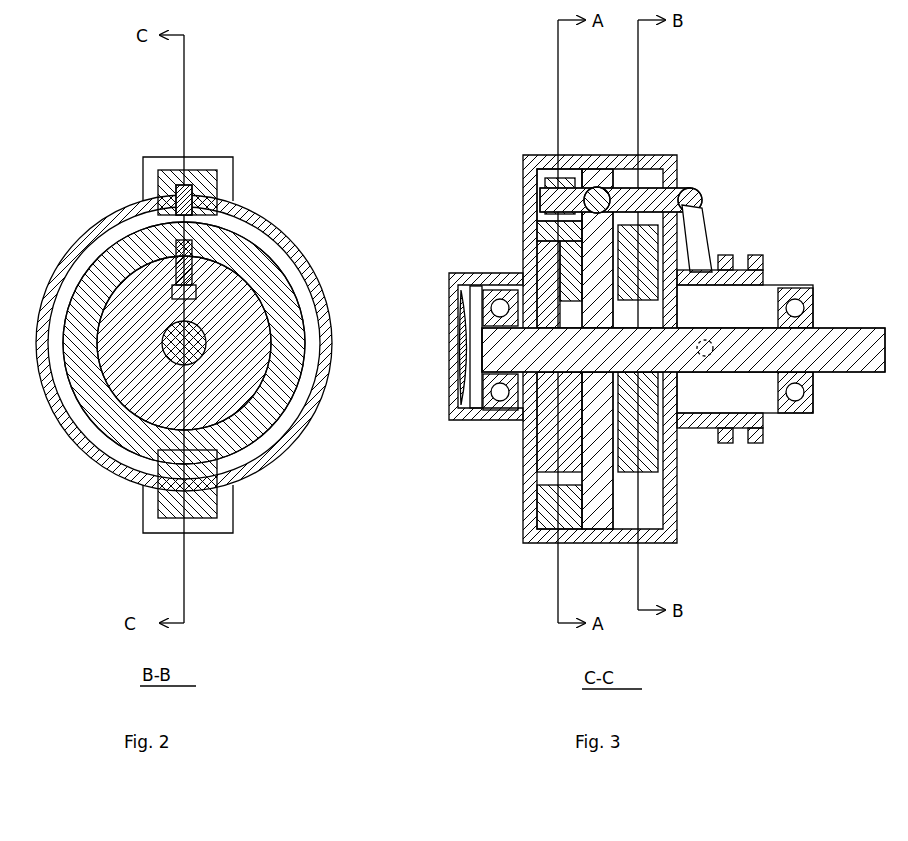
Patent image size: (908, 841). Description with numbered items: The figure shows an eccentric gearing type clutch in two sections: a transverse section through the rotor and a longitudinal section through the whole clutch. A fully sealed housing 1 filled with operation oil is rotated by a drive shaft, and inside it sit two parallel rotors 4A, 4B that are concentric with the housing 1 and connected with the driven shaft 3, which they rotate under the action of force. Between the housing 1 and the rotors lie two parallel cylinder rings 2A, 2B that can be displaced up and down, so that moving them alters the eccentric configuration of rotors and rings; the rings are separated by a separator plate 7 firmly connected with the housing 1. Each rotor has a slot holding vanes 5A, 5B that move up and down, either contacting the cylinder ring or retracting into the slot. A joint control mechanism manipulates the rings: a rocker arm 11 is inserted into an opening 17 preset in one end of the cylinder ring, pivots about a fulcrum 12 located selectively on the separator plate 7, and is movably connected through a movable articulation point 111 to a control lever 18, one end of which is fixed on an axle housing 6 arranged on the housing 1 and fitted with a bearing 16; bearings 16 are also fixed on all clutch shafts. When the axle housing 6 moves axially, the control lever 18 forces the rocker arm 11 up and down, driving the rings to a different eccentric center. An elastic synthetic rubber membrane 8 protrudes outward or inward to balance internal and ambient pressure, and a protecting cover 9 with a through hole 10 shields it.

In FIG. 3, the housing 1 is at (533, 160).
In FIG. 3, the cylinder ring 2A is at (537, 228).
In FIG. 2, the cylinder ring 2B is at (257, 232).
In FIG. 3, the cylinder ring 2B is at (540, 185).
In FIG. 2, the driven shaft 3 is at (196, 335).
In FIG. 3, the driven shaft 3 is at (850, 374).
In FIG. 3, the rotor 4A is at (605, 430).
In FIG. 2, the rotor 4B is at (155, 462).
In FIG. 3, the rotor 4B is at (570, 500).
In FIG. 3, the vane 5A is at (540, 280).
In FIG. 2, the vane 5B is at (150, 207).
In FIG. 3, the vane 5B is at (575, 262).
In FIG. 3, the axle housing 6 is at (766, 268).
In FIG. 3, the separator plate 7 is at (598, 532).
In FIG. 3, the rubber membrane 8 is at (470, 408).
In FIG. 3, the protecting cover 9 is at (449, 356).
In FIG. 3, the through hole 10 is at (458, 394).
In FIG. 3, the rocker arm 11 is at (656, 166).
In FIG. 3, the fulcrum 12 is at (611, 158).
In FIG. 3, the bearing 16 is at (805, 312).
In FIG. 2, the opening 17 is at (212, 182).
In FIG. 3, the control lever 18 is at (704, 240).
In FIG. 3, the movable articulation point 111 is at (697, 186).